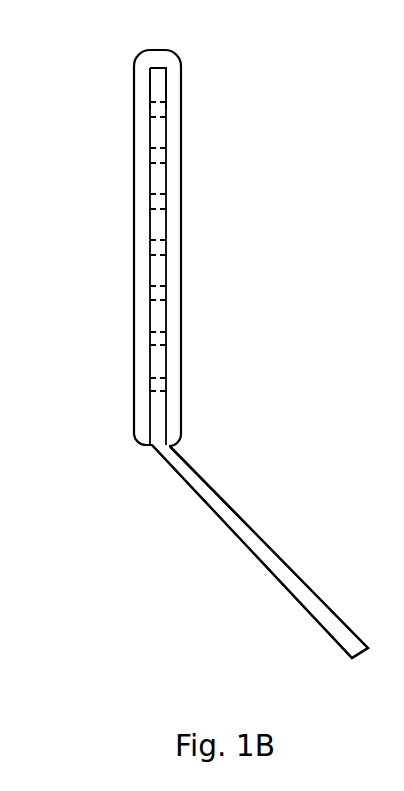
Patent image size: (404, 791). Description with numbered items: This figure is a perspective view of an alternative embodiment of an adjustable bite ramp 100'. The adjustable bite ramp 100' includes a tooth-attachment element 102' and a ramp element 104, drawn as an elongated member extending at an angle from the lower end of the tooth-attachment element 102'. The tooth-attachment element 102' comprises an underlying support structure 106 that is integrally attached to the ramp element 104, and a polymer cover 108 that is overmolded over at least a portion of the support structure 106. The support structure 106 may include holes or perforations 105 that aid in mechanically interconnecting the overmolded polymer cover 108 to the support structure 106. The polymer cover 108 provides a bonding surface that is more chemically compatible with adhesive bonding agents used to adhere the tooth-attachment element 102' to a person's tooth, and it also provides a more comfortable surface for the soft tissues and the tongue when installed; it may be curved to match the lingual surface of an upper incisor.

The adjustable bite ramp 100' is at (359, 328).
The tooth-attachment element 102' is at (251, 354).
The ramp element 104 is at (290, 577).
The holes or perforations 105 is at (148, 103).
The support structure 106 is at (150, 317).
The polymer cover 108 is at (140, 180).